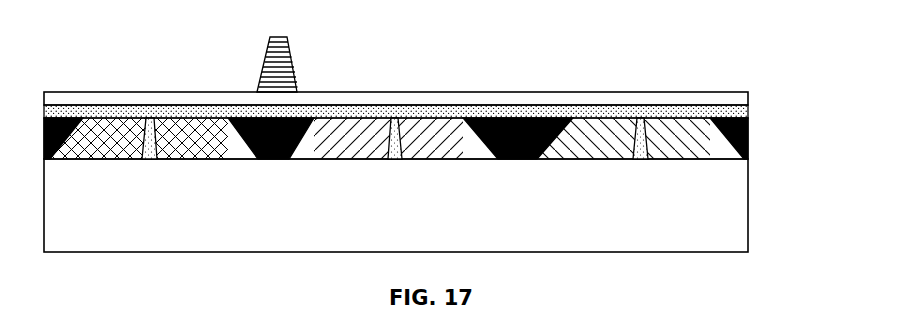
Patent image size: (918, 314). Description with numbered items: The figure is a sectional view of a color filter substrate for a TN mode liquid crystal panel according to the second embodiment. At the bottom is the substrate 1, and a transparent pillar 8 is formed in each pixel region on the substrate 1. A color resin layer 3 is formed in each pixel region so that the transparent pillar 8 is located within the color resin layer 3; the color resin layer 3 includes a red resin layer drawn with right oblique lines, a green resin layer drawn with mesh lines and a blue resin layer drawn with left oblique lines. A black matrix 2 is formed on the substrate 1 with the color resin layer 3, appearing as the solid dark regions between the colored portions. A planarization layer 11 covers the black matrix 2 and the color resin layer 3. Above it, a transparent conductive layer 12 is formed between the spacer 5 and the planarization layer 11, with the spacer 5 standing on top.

The substrate 1 is at (750, 204).
The black matrix 2 is at (750, 139).
The color resin layer 3 is at (672, 130).
The spacer 5 is at (282, 68).
The transparent pillar 8 is at (146, 130).
The planarization layer 11 is at (585, 115).
The transparent conductive layer 12 is at (462, 103).